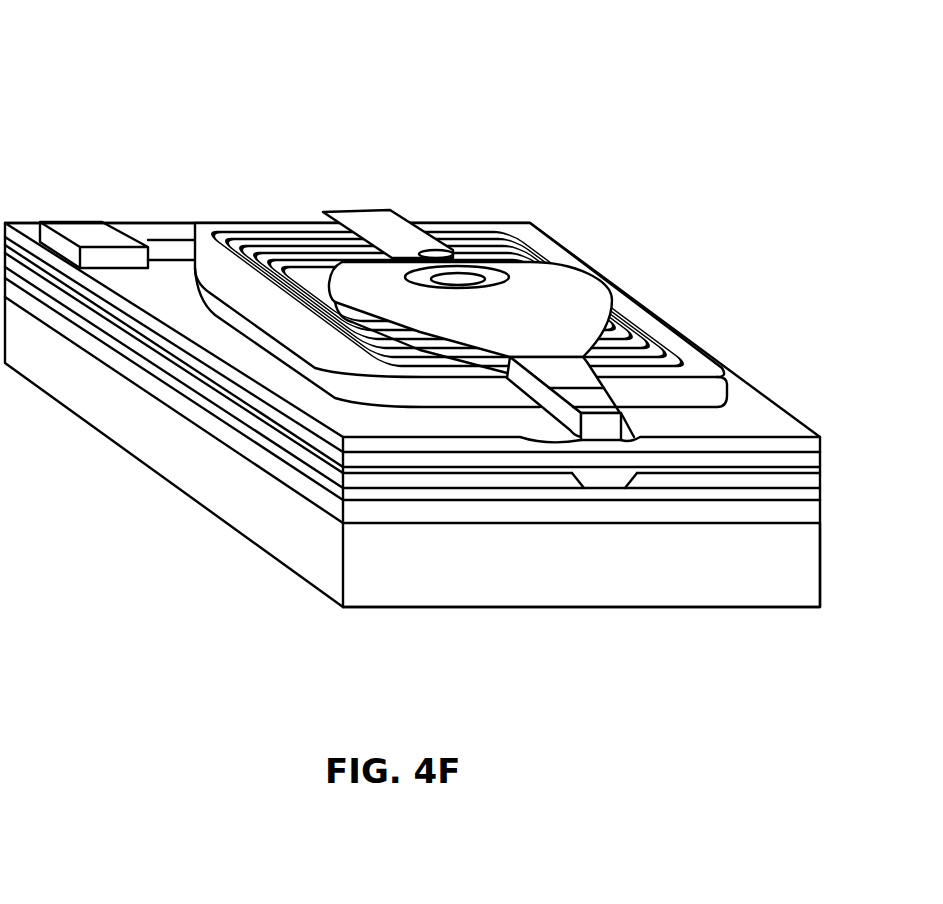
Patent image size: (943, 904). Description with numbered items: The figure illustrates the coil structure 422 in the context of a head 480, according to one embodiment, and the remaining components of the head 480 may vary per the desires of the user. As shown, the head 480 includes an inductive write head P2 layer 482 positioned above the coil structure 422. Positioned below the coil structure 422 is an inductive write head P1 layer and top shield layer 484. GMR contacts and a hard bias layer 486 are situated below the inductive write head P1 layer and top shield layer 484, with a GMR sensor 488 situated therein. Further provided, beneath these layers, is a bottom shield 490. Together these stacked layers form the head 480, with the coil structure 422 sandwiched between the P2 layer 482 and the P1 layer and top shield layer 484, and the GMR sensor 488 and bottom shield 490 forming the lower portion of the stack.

The head 480 is at (575, 148).
The coil structure 422 is at (235, 229).
The inductive write head P2 layer 482 is at (512, 311).
The inductive write head P1 layer & top shield layer 484 is at (592, 459).
The GMR contacts and a hard bias layer 486 is at (516, 491).
The GMR sensor 488 is at (596, 498).
The bottom shield 490 is at (699, 533).